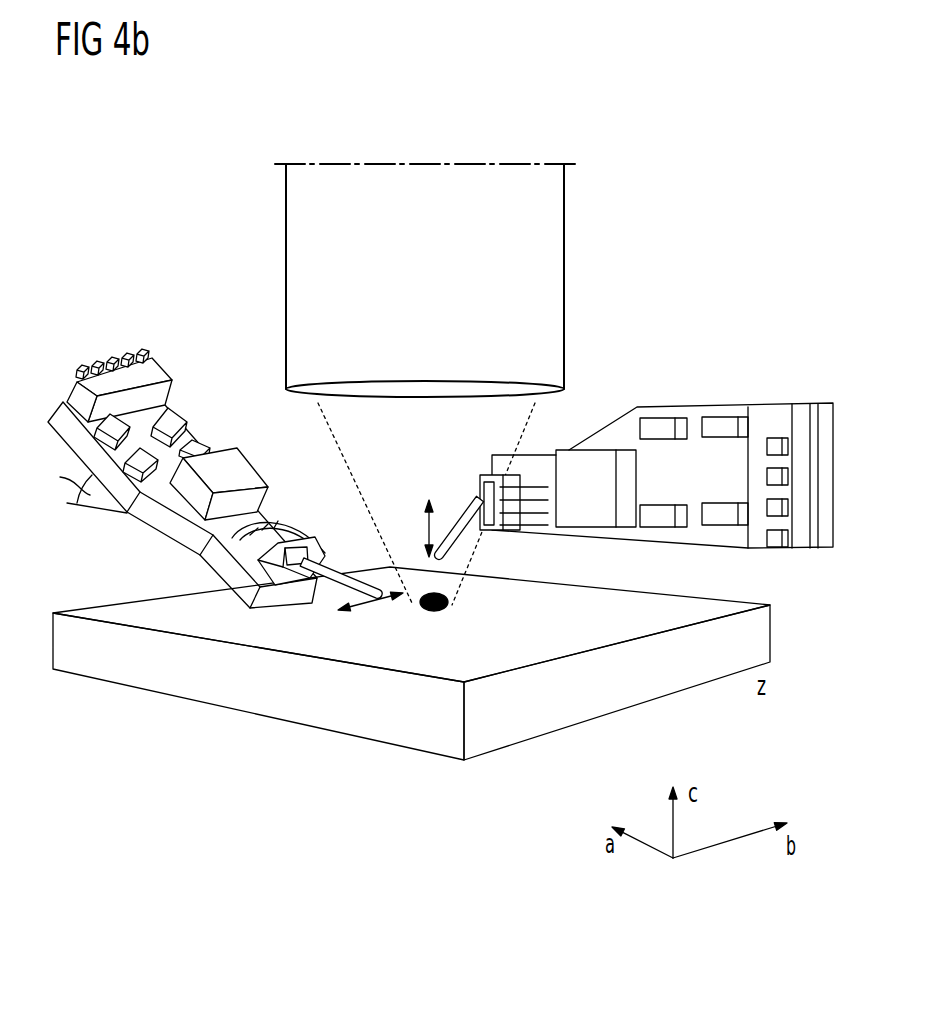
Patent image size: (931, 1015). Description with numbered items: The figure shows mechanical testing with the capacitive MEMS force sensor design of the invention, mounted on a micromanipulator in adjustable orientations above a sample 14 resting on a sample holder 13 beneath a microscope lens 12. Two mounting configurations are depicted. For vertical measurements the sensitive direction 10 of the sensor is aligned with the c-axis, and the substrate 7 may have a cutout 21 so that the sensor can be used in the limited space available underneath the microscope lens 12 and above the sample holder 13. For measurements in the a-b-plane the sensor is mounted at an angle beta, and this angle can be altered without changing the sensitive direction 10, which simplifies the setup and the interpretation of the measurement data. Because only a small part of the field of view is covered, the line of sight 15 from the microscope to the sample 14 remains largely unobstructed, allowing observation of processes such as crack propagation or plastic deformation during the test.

The substrate 7 is at (690, 452).
The sensitive direction 10 is at (427, 528).
The microscope lens 12 is at (300, 252).
The sample holder 13 is at (345, 730).
The sample 14 is at (437, 610).
The line of sight 15 is at (522, 427).
The cutout 21 is at (538, 452).